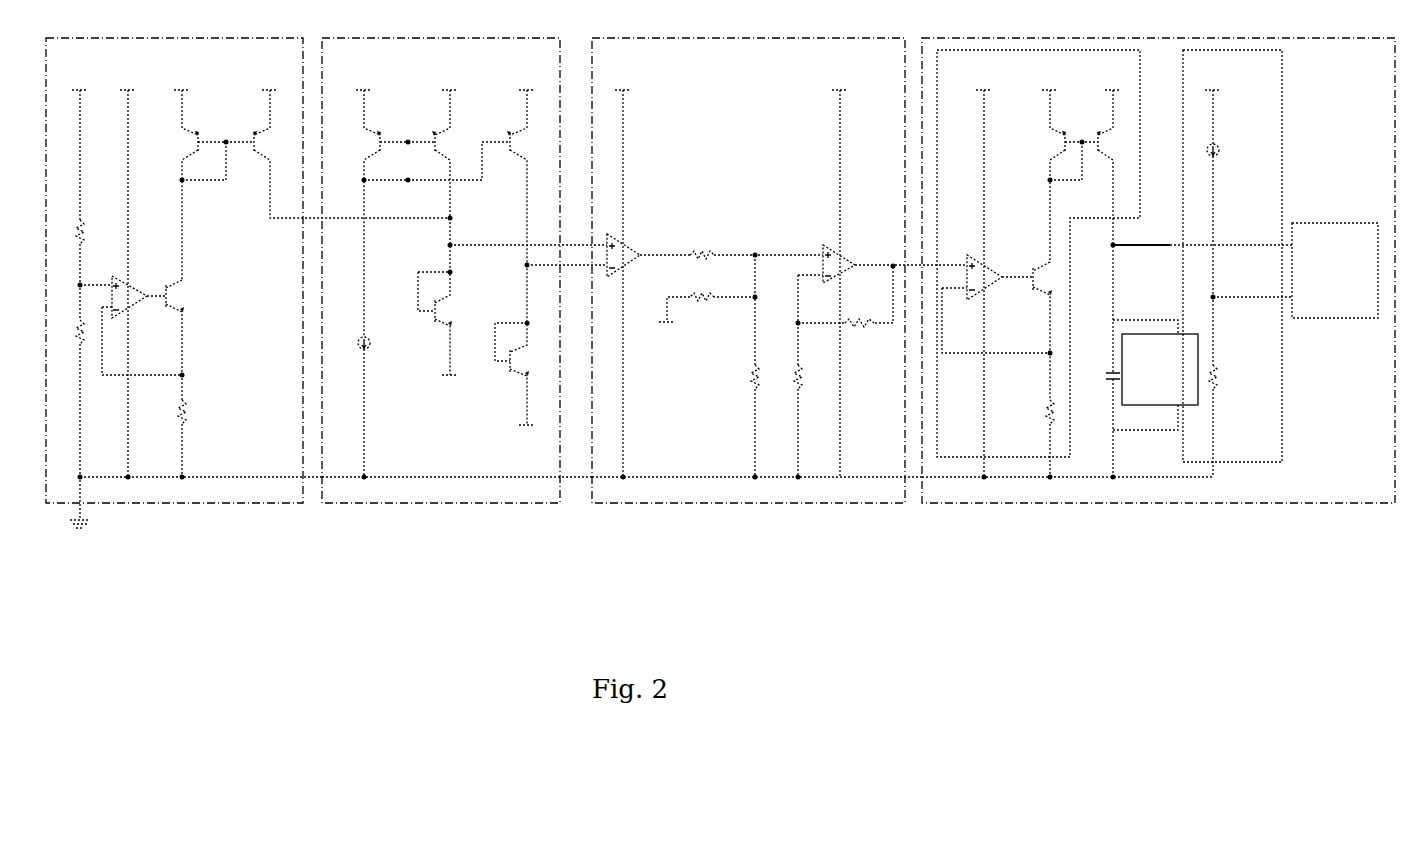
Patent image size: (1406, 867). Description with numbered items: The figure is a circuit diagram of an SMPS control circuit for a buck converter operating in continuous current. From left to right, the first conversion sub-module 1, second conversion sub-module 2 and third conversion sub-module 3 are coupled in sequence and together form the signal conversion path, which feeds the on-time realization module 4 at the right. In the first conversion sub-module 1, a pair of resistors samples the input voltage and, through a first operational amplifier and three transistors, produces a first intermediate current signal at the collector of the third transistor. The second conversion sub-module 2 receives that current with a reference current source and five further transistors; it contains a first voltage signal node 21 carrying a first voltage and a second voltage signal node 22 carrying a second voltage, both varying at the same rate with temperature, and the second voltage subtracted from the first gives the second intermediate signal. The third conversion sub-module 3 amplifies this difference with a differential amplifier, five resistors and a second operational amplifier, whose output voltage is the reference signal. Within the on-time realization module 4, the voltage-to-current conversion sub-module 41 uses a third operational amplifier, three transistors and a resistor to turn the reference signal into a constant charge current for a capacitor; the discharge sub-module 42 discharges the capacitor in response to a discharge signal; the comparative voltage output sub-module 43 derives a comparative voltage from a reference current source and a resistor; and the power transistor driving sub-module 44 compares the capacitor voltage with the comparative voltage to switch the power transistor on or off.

The first conversion sub-module 1 is at (215, 493).
The second conversion sub-module 2 is at (440, 493).
The third conversion sub-module 3 is at (763, 493).
The on-time realization module 4 is at (1027, 493).
The first voltage signal node 21 is at (450, 245).
The second voltage signal node 22 is at (527, 265).
The voltage-to-current conversion sub-module 41 is at (1067, 433).
The discharge sub-module 42 is at (1187, 405).
The comparative voltage output sub-module 43 is at (1273, 398).
The power transistor driving sub-module 44 is at (1368, 318).